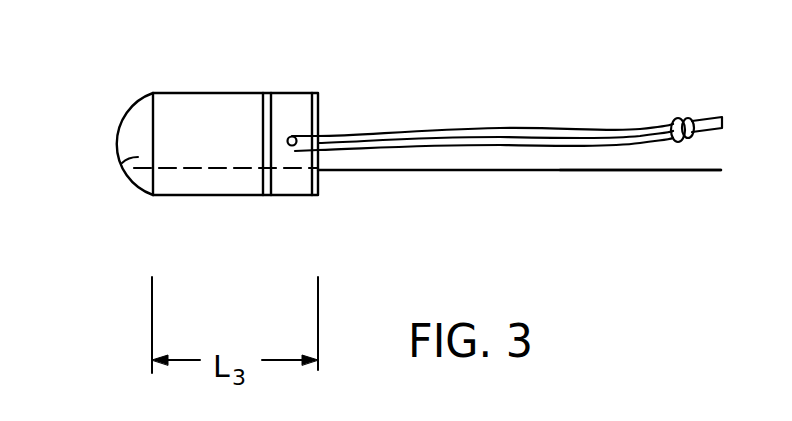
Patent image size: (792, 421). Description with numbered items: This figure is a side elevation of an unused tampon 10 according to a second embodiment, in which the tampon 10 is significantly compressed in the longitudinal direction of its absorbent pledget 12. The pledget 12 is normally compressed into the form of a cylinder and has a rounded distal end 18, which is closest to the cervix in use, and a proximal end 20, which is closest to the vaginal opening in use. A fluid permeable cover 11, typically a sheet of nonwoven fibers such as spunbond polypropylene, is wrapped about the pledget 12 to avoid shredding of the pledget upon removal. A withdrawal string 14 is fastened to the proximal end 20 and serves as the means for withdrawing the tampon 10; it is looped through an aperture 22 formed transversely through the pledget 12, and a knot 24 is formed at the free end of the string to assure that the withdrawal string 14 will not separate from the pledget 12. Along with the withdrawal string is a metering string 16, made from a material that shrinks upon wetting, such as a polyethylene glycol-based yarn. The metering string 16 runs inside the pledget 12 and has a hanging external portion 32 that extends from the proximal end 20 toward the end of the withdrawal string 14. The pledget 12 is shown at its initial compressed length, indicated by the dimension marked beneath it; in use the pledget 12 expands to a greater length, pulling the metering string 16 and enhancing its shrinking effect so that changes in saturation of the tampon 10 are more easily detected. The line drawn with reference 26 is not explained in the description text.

The tampon 10 is at (120, 66).
The fluid permeable cover 11 is at (186, 113).
The absorbent pledget 12 is at (118, 131).
The withdrawal string 14 is at (263, 134).
The metering string 16 is at (555, 173).
The distal end 18 is at (122, 163).
The proximal end 20 is at (320, 118).
The aperture 22 is at (295, 155).
The knot 24 is at (685, 116).
The body 26 is at (187, 182).
The hanging external portion 32 is at (652, 206).